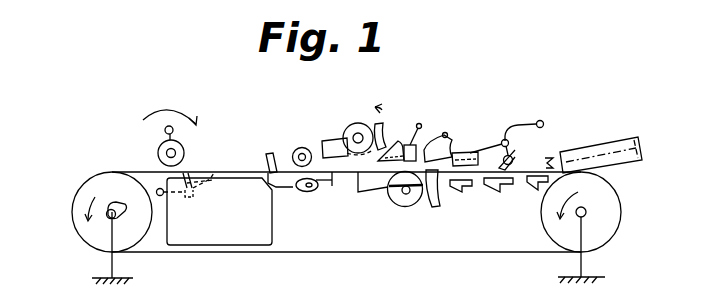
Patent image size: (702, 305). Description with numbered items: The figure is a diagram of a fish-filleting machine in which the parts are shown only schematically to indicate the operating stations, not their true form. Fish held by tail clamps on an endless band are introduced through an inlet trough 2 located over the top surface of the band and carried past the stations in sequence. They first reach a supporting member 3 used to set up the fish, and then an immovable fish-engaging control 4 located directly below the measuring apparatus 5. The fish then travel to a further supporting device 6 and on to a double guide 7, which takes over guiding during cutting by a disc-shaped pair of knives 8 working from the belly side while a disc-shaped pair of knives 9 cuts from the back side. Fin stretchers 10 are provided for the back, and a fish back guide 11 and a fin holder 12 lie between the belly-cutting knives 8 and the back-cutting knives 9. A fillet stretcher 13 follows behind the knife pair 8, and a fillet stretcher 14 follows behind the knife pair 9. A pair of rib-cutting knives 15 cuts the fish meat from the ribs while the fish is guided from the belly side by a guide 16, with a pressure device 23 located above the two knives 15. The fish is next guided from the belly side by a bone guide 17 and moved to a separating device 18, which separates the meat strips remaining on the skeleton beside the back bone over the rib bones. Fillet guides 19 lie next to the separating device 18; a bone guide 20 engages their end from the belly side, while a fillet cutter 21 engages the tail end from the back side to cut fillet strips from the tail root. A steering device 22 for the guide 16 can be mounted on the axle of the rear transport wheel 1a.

The rear transport wheel 1a is at (76, 229).
The inlet trough 2 is at (630, 140).
The supporting member 3 is at (534, 187).
The immovable fish-engaging control 4 is at (500, 186).
The measuring apparatus 5 is at (505, 139).
The further supporting device 6 is at (458, 194).
The double guide 7 is at (433, 208).
The disc-shaped pair of knives 8 is at (408, 207).
The disc-shaped pair of knives 9 is at (358, 130).
The fin stretchers 10 is at (421, 127).
The fish back guide 11 is at (399, 141).
The fin holder 12 is at (387, 132).
The fillet stretcher 13 is at (372, 190).
The fillet stretcher 14 is at (332, 140).
The pair of rib-cutting knives 15 is at (302, 192).
The guide 16 is at (332, 187).
The bone guide 17 is at (452, 141).
The separating device 18 is at (268, 152).
The fillet guides 19 is at (219, 211).
The bone guide 20 is at (213, 177).
The fillet cutter 21 is at (184, 158).
The steering device 22 is at (115, 218).
The pressure device 23 is at (301, 147).